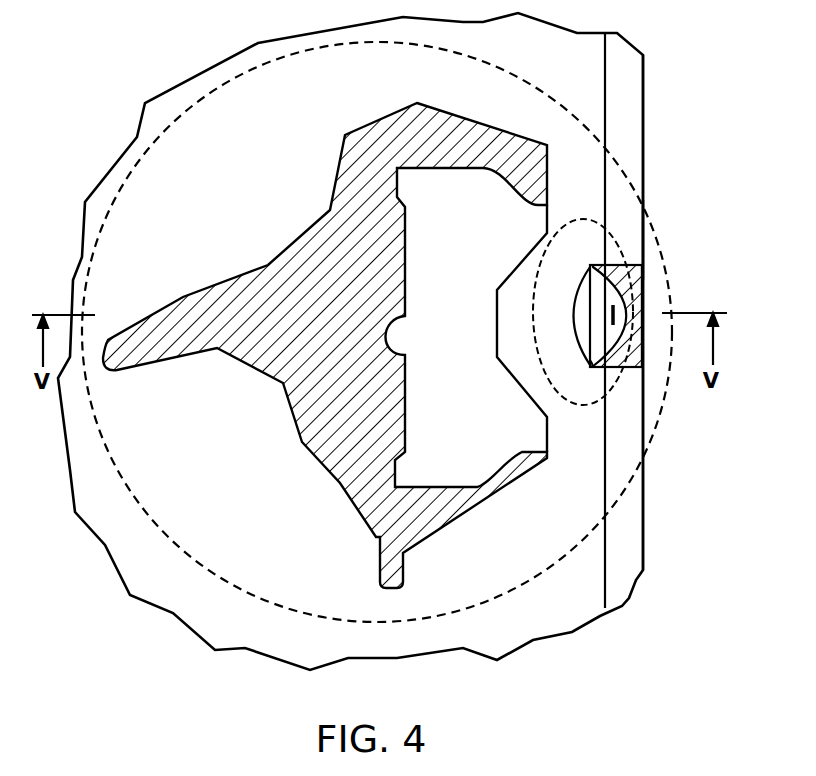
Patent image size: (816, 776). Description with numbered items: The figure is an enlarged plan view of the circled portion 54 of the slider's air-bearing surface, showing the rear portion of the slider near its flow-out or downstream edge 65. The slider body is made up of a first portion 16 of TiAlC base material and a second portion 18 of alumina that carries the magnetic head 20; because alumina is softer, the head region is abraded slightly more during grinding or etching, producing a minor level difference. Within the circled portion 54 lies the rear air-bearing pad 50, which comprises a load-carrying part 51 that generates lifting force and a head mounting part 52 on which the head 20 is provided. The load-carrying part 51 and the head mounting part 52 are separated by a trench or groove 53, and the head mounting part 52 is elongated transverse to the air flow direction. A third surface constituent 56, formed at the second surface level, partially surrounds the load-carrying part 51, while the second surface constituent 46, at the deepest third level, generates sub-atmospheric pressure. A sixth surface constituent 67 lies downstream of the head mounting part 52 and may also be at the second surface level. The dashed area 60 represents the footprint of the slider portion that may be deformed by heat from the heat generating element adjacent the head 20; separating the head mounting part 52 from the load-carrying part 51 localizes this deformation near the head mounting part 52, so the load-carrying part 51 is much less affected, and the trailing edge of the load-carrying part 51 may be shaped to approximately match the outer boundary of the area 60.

The first portion 16 is at (211, 82).
The second portion 18 is at (623, 82).
The head 20 is at (611, 320).
The second surface constituent 46 is at (197, 485).
The rear air-bearing pad 50 is at (629, 562).
The load-carrying part 51 is at (436, 230).
The head mounting part 52 is at (587, 367).
The trench or groove 53 is at (499, 327).
The circled portion 54 is at (518, 78).
The third surface constituent 56 is at (305, 335).
The area 60 is at (610, 230).
The flow-out or downstream edge 65 is at (647, 240).
The sixth surface constituent 67 is at (632, 283).